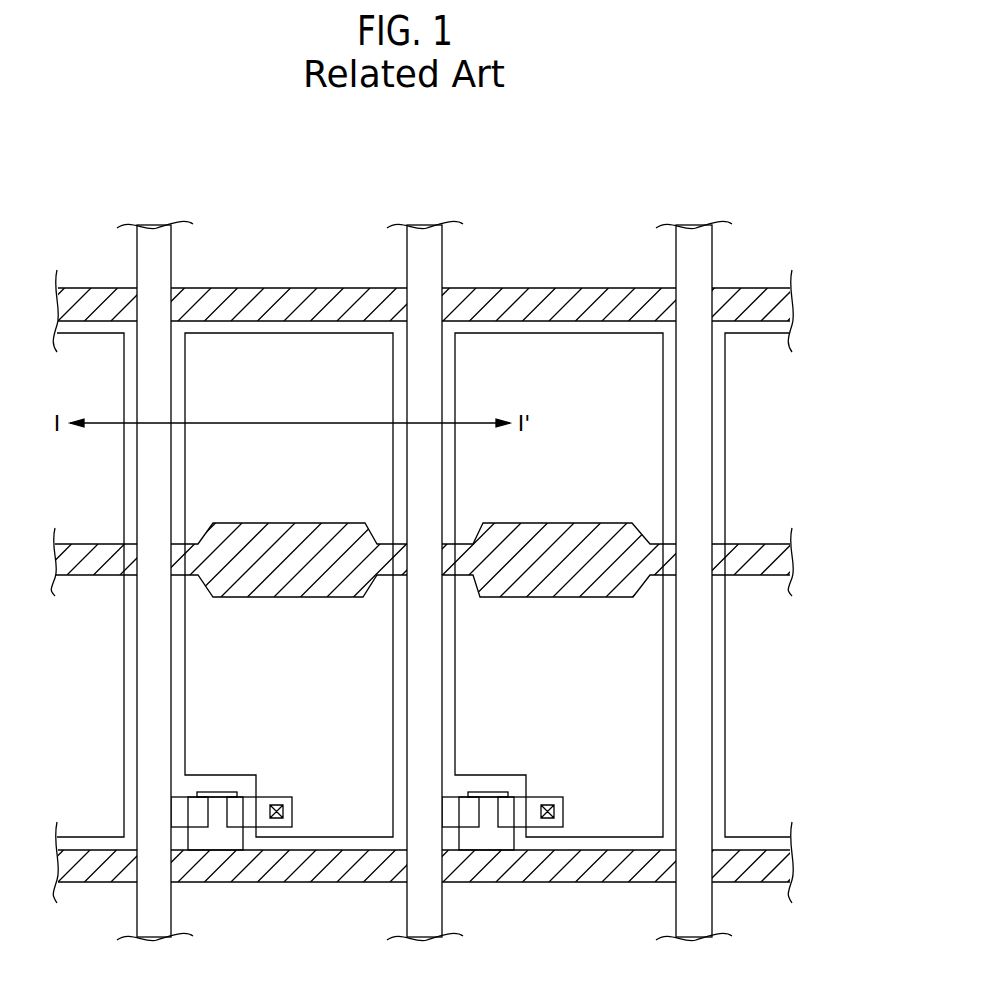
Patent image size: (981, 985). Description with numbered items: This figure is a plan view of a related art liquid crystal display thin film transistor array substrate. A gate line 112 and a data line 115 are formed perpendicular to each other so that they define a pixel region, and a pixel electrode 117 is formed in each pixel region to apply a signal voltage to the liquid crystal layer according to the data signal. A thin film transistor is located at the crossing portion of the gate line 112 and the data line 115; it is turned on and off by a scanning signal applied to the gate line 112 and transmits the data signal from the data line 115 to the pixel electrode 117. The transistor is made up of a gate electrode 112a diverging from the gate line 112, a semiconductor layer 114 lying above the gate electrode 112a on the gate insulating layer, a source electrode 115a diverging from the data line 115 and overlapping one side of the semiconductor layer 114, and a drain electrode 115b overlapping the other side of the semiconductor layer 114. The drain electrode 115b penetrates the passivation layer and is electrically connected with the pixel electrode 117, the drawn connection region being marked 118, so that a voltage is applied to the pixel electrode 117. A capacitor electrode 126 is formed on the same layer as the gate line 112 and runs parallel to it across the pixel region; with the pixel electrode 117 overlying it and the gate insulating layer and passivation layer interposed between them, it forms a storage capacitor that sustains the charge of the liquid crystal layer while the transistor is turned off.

The gate line 112 is at (327, 857).
The gate electrode 112a is at (203, 790).
The semiconductor layer 114 is at (218, 817).
The data line 115 is at (137, 656).
The source electrode 115a is at (178, 813).
The drain electrode 115b is at (267, 800).
The pixel electrode 117 is at (289, 347).
The contact hole 118 is at (278, 823).
The capacitor electrode 126 is at (282, 578).